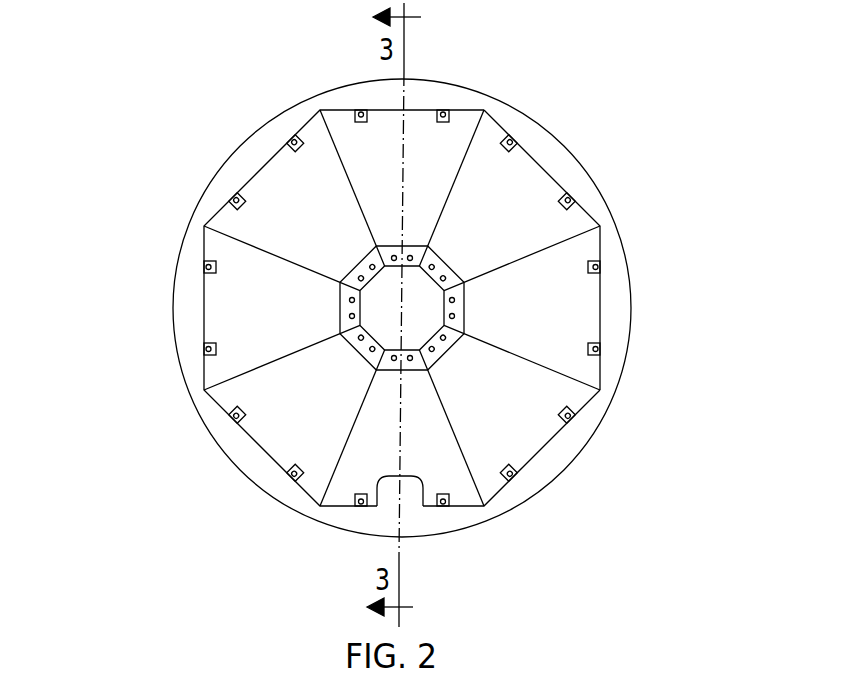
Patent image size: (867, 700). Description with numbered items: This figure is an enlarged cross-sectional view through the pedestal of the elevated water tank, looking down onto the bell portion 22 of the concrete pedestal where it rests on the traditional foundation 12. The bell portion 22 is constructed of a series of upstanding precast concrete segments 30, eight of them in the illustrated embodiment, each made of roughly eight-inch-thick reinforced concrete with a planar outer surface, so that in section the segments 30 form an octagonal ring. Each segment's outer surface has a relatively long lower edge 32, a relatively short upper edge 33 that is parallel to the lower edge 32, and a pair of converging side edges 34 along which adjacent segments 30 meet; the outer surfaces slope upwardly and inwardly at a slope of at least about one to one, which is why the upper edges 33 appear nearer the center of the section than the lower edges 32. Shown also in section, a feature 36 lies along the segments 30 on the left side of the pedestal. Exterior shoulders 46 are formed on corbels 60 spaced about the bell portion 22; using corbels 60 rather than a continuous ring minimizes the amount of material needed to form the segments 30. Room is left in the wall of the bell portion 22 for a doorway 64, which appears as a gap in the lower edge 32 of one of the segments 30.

The foundation 12 is at (543, 490).
The bell portion 22 is at (562, 300).
The upstanding precast concrete segments 30 is at (512, 245).
The lower edge 32 is at (601, 247).
The upper edge 33 is at (412, 246).
The converging side edges 34 is at (347, 173).
The side panels 36 is at (273, 400).
The exterior shoulders 46 is at (553, 201).
The corbels 60 is at (573, 412).
The doorway 64 is at (372, 482).